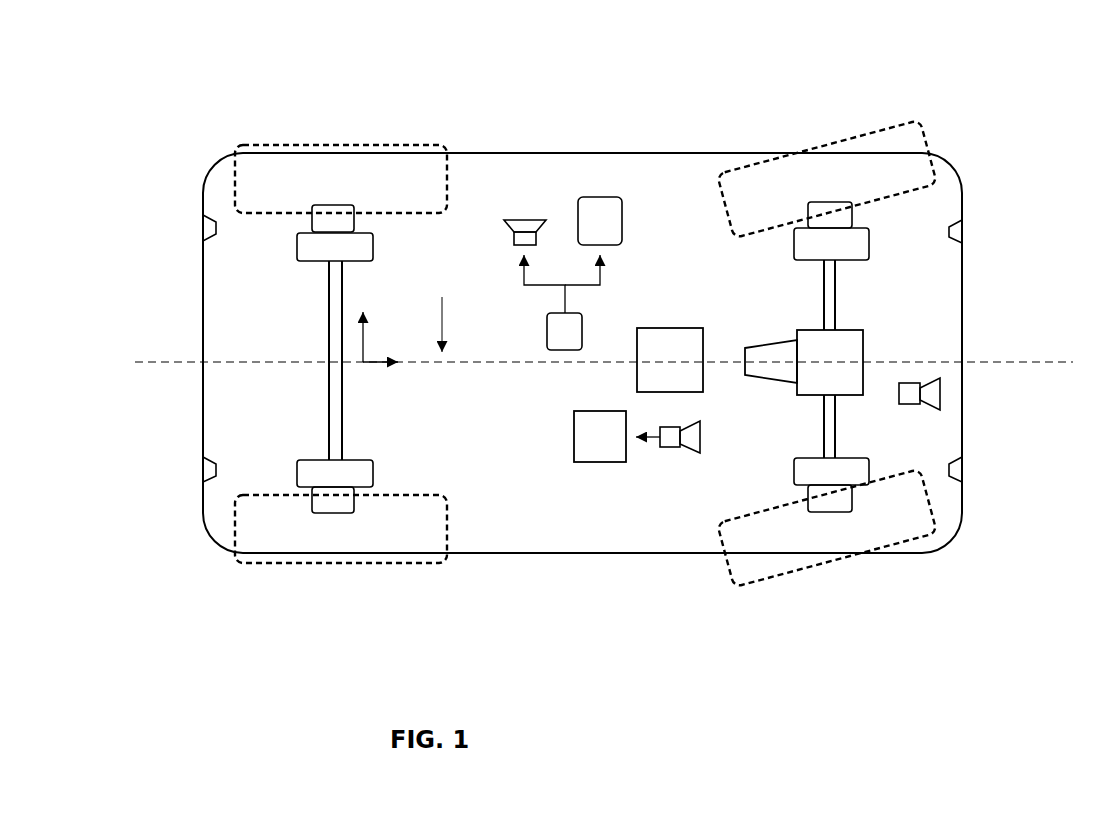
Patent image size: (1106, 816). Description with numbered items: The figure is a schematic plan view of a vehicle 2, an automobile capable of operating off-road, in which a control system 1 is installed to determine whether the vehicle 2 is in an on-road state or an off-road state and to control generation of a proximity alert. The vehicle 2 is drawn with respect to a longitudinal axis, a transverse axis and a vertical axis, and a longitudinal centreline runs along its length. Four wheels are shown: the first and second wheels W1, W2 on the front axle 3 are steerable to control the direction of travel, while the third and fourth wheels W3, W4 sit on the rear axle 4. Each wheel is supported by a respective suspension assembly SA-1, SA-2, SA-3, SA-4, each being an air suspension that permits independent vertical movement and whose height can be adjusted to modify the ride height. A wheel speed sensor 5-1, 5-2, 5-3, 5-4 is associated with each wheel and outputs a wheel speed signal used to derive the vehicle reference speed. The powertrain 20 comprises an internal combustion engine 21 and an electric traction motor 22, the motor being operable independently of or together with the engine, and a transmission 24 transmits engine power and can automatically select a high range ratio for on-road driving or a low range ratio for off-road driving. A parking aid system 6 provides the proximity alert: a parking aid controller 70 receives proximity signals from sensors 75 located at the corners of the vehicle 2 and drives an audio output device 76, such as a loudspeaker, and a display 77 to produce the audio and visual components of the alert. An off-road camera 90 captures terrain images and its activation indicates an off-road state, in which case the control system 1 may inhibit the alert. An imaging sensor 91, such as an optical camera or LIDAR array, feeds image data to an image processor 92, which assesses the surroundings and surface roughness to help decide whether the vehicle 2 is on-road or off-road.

The control system 1 is at (564, 361).
The vehicle 2 is at (408, 110).
The front axle 3 is at (841, 423).
The rear axle 4 is at (326, 297).
The parking aid system 6 is at (1013, 192).
The powertrain 20 is at (910, 363).
The internal combustion engine 21 is at (830, 362).
The electric traction motor 22 is at (670, 360).
The transmission 24 is at (770, 336).
The parking aid controller 70 is at (562, 302).
The sensors 75 is at (203, 226).
The audio output device 76 is at (525, 218).
The display 77 is at (600, 221).
The off-road camera 90 is at (942, 393).
The imaging sensor 91 is at (670, 449).
The image processor 92 is at (617, 436).
The first wheel W1 is at (817, 141).
The second wheel W2 is at (815, 572).
The third wheel W3 is at (287, 141).
The fourth wheel W4 is at (288, 569).
The wheel speed sensor 5-1 is at (830, 215).
The wheel speed sensor 5-2 is at (830, 498).
The wheel speed sensor 5-3 is at (333, 218).
The wheel speed sensor 5-4 is at (333, 500).
The suspension assembly SA-1 is at (831, 244).
The suspension assembly SA-2 is at (831, 471).
The suspension assembly SA-3 is at (335, 247).
The suspension assembly SA-4 is at (335, 473).